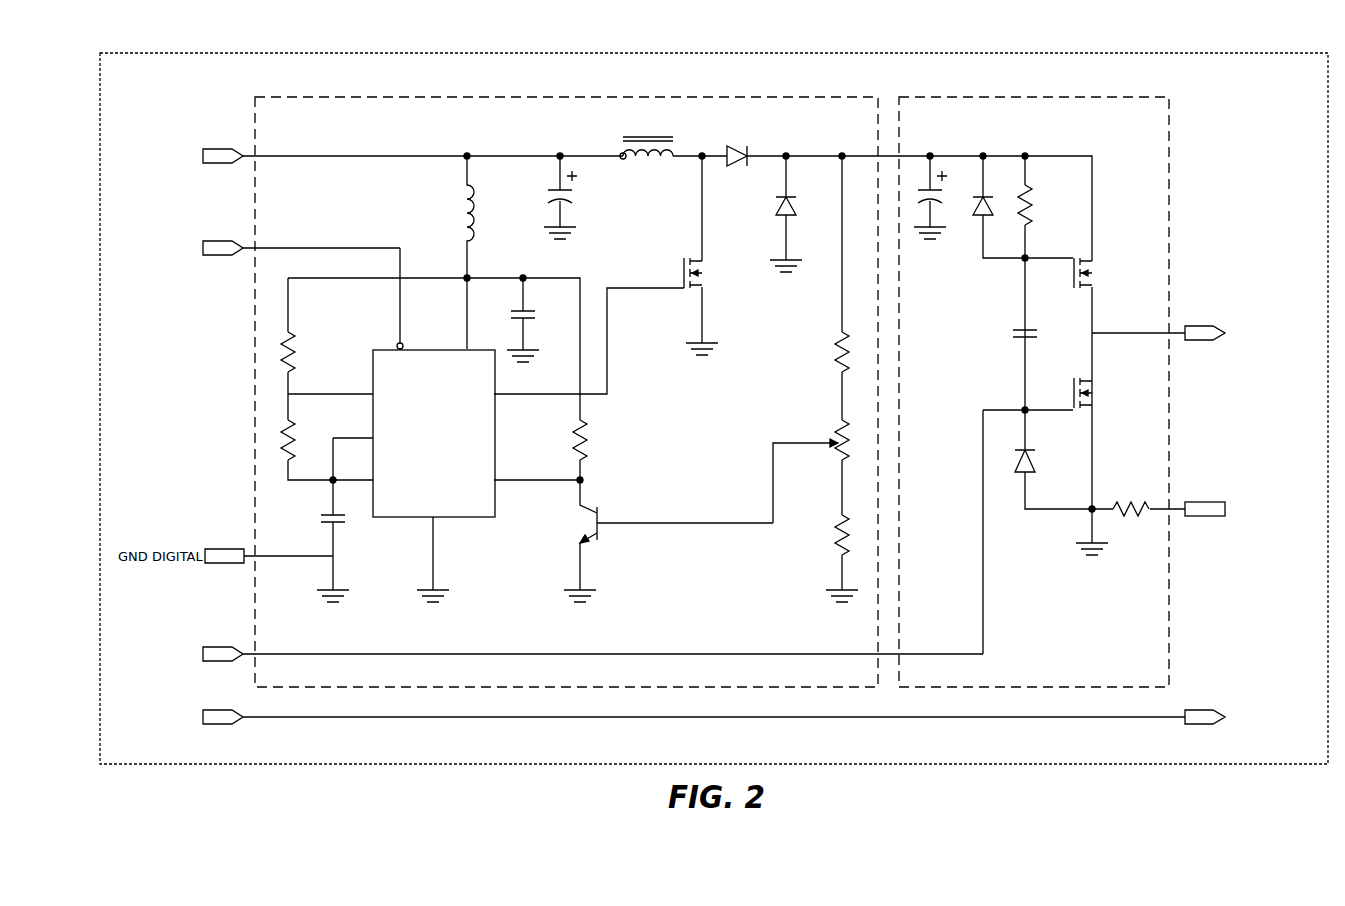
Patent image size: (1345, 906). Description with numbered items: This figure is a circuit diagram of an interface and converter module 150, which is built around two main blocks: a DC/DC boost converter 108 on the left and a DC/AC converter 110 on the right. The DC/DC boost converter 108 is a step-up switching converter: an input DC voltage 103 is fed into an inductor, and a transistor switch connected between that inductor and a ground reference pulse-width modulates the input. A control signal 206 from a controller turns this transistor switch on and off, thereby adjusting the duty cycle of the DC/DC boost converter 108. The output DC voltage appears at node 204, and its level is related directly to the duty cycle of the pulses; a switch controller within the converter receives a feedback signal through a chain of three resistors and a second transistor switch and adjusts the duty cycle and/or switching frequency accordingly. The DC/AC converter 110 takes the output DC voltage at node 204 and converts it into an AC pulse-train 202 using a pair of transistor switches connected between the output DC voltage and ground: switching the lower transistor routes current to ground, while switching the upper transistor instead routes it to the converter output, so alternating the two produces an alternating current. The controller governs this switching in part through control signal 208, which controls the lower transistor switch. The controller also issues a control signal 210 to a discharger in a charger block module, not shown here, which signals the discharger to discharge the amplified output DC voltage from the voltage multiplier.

The interface and converter module 150 is at (1231, 35).
The DC/DC boost converter 108 is at (708, 97).
The DC/AC converter 110 is at (1115, 97).
The input DC voltage 103 is at (221, 149).
The control signal 206 is at (221, 241).
The node 204 is at (790, 156).
The AC pulse-train 202 is at (1203, 342).
The control signal 208 is at (221, 647).
The control signal 210 is at (221, 726).